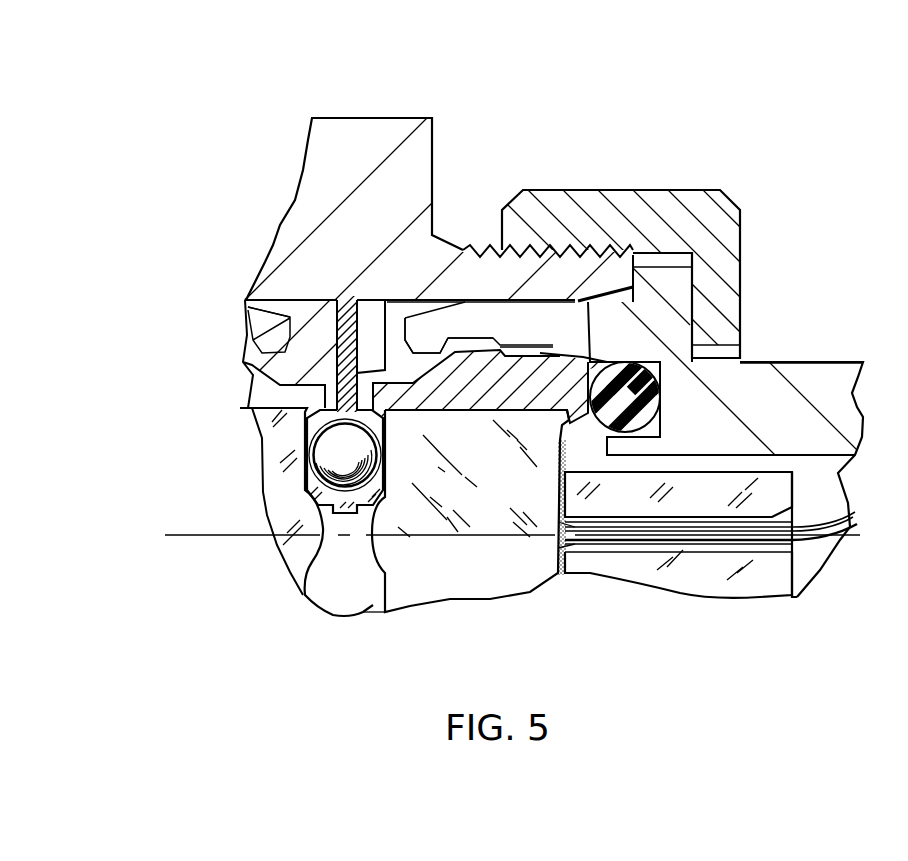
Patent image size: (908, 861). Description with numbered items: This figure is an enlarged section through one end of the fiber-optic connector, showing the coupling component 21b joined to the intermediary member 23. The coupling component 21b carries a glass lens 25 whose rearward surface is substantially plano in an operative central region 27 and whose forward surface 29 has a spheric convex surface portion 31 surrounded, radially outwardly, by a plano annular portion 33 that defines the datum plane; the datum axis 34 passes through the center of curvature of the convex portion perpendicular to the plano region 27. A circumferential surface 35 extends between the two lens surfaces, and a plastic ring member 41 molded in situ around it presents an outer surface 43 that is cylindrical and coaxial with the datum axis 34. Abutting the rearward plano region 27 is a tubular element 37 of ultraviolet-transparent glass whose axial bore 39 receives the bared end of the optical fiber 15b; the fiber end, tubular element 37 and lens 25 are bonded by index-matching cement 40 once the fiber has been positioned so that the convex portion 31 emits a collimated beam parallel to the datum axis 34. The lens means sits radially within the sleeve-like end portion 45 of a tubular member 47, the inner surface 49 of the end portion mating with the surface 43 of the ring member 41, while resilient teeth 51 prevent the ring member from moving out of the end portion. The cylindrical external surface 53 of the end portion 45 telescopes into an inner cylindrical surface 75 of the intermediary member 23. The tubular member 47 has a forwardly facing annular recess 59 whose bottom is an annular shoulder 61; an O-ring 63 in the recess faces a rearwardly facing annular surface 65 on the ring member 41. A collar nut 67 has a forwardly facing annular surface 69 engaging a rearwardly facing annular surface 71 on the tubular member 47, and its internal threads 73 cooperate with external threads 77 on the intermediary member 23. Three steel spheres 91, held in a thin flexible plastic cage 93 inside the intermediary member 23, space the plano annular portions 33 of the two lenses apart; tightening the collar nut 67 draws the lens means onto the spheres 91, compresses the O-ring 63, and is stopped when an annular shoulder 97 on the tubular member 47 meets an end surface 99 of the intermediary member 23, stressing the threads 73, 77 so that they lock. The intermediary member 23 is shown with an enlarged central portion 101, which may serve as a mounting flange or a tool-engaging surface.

The intermediary member 23 is at (372, 90).
The enlarged central portion 101 is at (342, 130).
The external threads 77 is at (472, 250).
The collar nut 67 is at (648, 220).
The end surfaces 99 is at (640, 213).
The internal threads 73 is at (603, 250).
The annular shoulders 97 is at (634, 282).
The forwardly facing annular surface 69 is at (694, 300).
The rearwardly facing annular surface 71 is at (694, 306).
The O-ring 63 is at (665, 401).
The tubular member 47 is at (764, 368).
The forwardly facing annular recess 59 is at (664, 372).
The forwardly facing annular shoulder 61 is at (662, 424).
The rearwardly facing annular surface 65 is at (594, 368).
The circular cylindrical external surface 53 is at (516, 304).
The sleeve-like end portion 45 is at (508, 310).
The inner cylindrical surfaces 75 is at (532, 310).
The teeth 51 is at (405, 318).
The ring member 41 is at (259, 393).
The outer surface 43 is at (489, 352).
The circular cylindrical inner surface 49 is at (549, 357).
The cage 93 is at (337, 358).
The spheres 91 is at (306, 480).
The circumferential surface 35 is at (280, 444).
The lens 25 is at (272, 462).
The datum axis 34 is at (186, 535).
The convex surface portion 31 is at (318, 562).
The forward surface 29 is at (373, 587).
The plano annular portion 33 is at (395, 603).
The operative central region 27 is at (599, 460).
The optical fiber 15b is at (819, 538).
The cement 40 is at (582, 550).
The axial bore 39 is at (715, 548).
The tubular element 37 is at (762, 593).
The coupling component 21b is at (826, 212).